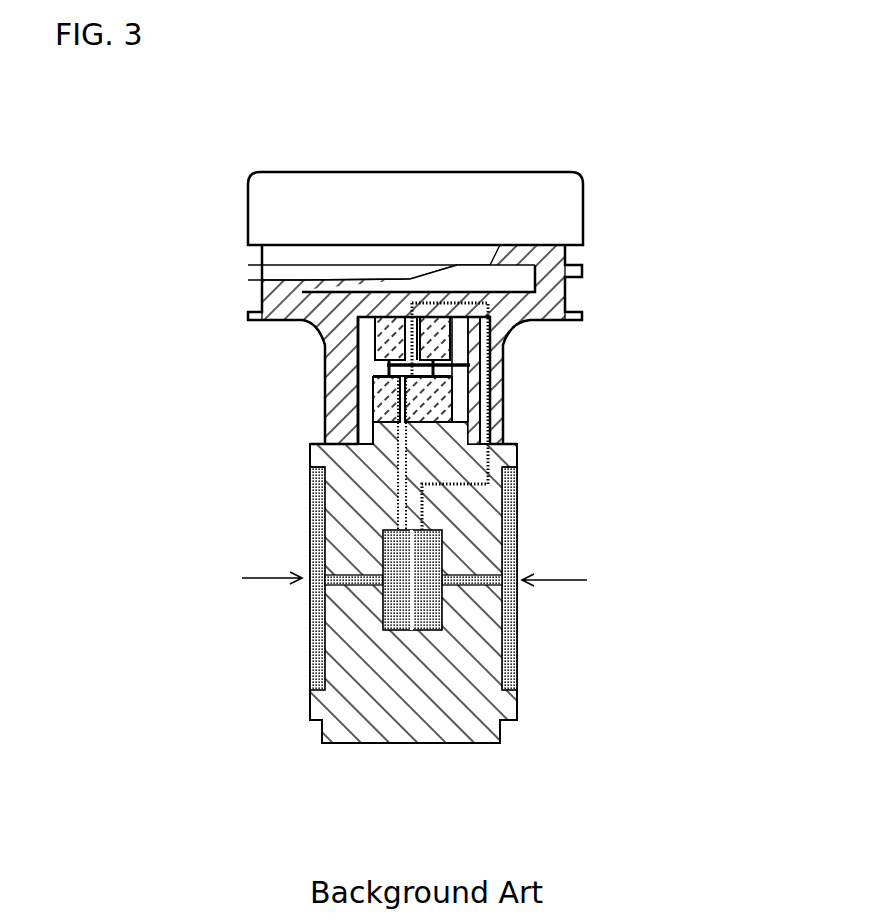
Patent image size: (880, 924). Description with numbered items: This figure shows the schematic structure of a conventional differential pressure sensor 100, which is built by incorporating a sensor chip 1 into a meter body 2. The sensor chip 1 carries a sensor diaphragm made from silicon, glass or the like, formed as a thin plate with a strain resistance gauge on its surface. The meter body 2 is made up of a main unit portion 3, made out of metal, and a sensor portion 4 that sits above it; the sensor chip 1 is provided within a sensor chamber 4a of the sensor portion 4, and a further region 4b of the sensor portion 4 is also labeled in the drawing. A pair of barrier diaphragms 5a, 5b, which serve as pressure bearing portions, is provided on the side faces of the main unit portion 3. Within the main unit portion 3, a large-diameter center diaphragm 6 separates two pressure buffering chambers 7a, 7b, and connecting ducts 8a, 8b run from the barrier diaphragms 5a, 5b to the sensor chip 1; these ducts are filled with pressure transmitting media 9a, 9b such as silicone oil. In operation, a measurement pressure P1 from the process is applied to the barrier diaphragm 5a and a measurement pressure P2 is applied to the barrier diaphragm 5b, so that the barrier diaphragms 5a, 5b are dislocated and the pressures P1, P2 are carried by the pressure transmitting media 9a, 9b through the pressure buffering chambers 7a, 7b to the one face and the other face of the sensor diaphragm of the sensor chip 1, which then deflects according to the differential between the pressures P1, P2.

The differential pressure sensor 100 is at (644, 200).
The sensor chip 1 is at (430, 367).
The meter body 2 is at (560, 300).
The main unit portion 3 is at (457, 705).
The sensor portion 4 is at (326, 347).
The sensor chamber 4a is at (356, 350).
The lower portion of case 4b is at (360, 436).
The barrier diaphragm 5a is at (520, 503).
The barrier diaphragm 5b is at (310, 514).
The center diaphragm 6 is at (415, 556).
The pressure buffering chamber 7a is at (427, 615).
The pressure buffering chamber 7b is at (390, 605).
The connecting duct 8a is at (517, 448).
The connecting duct 8b is at (395, 455).
The pressure transmitting medium 9a is at (470, 405).
The pressure transmitting medium 9b is at (392, 427).
The measurement pressure P1 is at (579, 585).
The measurement pressure P2 is at (248, 582).